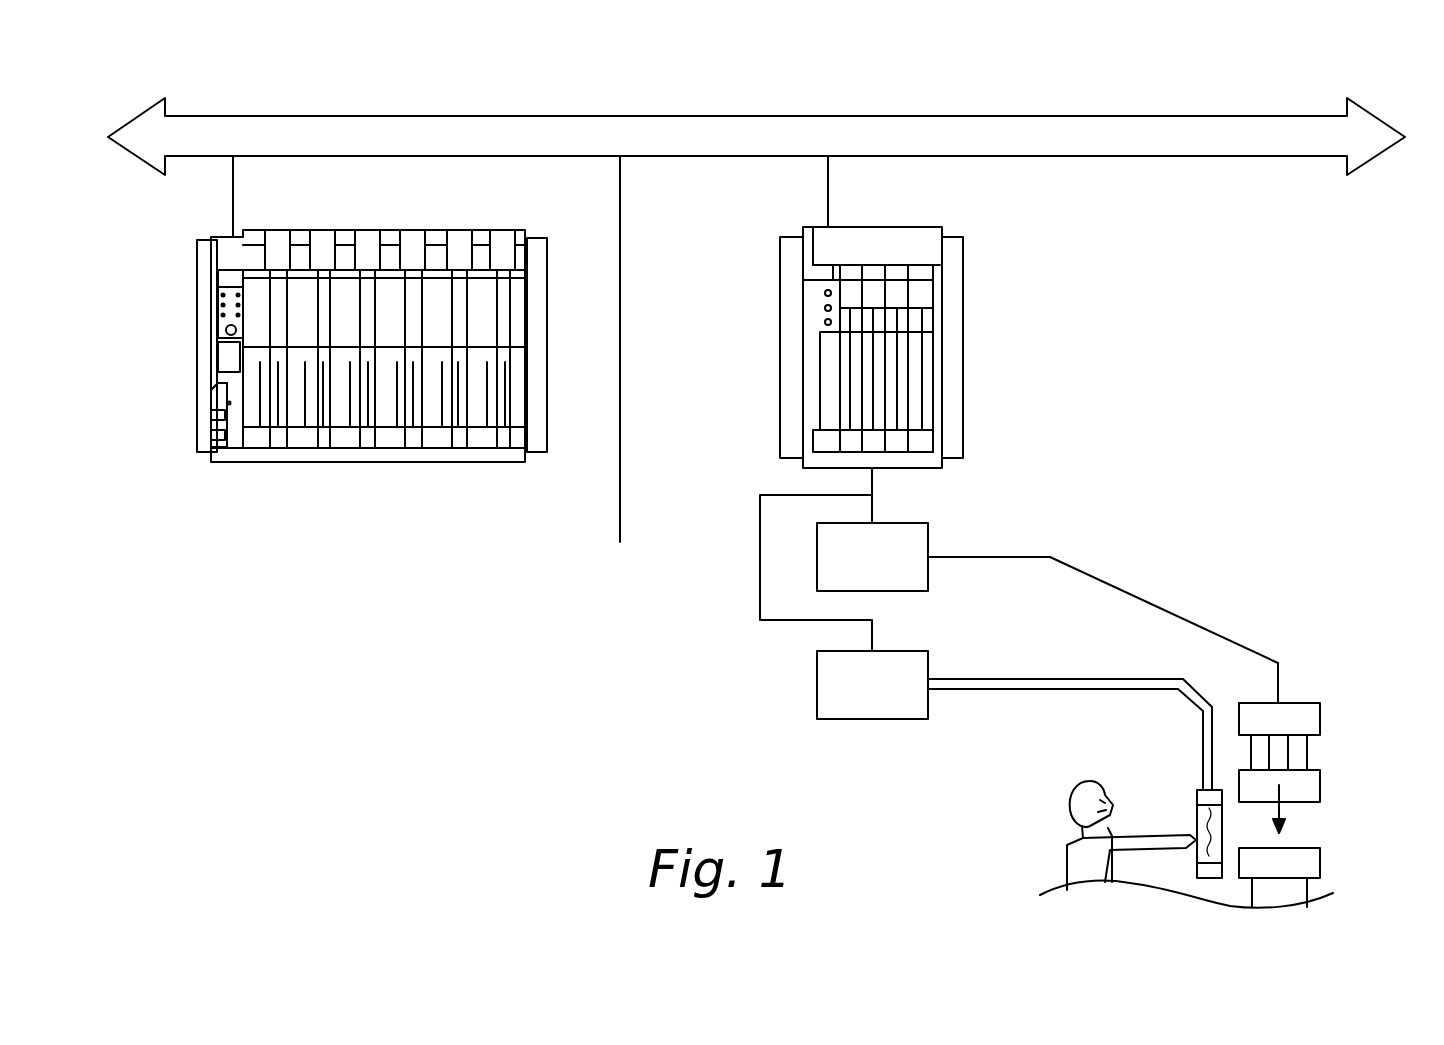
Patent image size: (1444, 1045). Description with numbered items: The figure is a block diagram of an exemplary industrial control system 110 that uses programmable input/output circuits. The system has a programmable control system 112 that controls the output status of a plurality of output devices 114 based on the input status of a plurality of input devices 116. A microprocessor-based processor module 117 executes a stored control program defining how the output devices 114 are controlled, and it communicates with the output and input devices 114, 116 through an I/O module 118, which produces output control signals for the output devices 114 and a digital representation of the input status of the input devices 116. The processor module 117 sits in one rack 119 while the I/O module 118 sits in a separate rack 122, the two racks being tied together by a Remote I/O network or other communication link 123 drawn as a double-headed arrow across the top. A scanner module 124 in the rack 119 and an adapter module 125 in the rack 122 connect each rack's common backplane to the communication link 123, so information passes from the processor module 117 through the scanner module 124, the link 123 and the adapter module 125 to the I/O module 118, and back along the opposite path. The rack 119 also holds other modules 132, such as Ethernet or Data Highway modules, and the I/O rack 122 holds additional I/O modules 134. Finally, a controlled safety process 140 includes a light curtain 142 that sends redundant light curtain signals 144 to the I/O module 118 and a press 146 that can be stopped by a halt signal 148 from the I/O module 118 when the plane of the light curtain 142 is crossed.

The industrial control system 110 is at (358, 88).
The programmable control system 112 is at (163, 255).
The output devices 114 is at (908, 523).
The input devices 116 is at (817, 690).
The processor module 117 is at (235, 442).
The I/O module 118 is at (852, 443).
The rack 119 is at (538, 238).
The rack 122 is at (955, 316).
The communication link 123 is at (1105, 116).
The scanner module 124 is at (300, 442).
The adapter module 125 is at (823, 320).
The other modules 132 is at (443, 442).
The additional I/O modules 134 is at (898, 285).
The controlled safety process 140 is at (1340, 672).
The light curtain 142 is at (1197, 815).
The redundant light curtain signals 144 is at (1212, 758).
The press 146 is at (1322, 785).
The halt signal 148 is at (1200, 625).